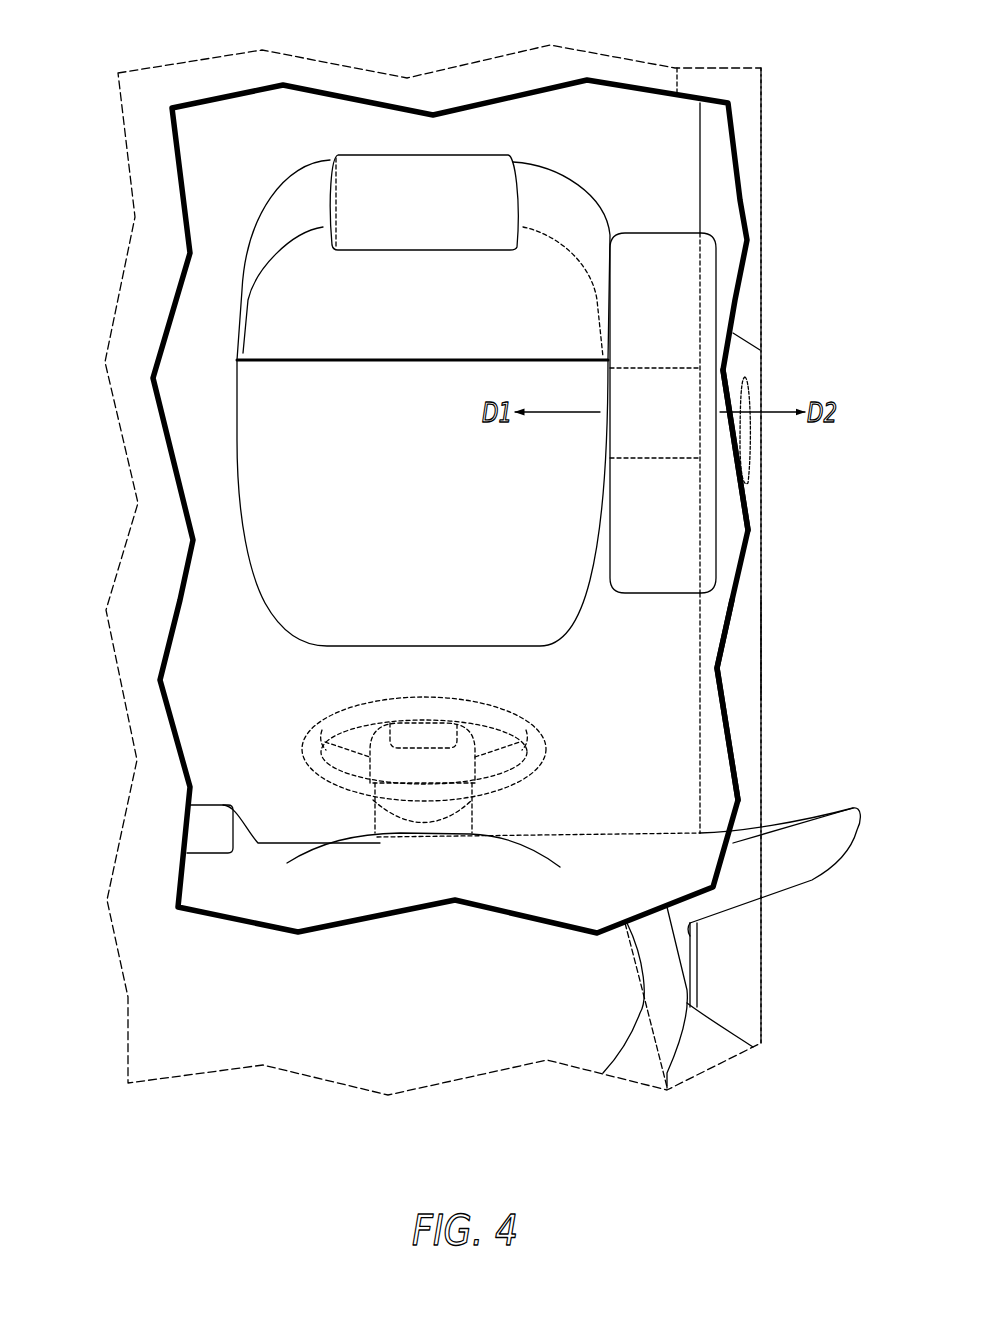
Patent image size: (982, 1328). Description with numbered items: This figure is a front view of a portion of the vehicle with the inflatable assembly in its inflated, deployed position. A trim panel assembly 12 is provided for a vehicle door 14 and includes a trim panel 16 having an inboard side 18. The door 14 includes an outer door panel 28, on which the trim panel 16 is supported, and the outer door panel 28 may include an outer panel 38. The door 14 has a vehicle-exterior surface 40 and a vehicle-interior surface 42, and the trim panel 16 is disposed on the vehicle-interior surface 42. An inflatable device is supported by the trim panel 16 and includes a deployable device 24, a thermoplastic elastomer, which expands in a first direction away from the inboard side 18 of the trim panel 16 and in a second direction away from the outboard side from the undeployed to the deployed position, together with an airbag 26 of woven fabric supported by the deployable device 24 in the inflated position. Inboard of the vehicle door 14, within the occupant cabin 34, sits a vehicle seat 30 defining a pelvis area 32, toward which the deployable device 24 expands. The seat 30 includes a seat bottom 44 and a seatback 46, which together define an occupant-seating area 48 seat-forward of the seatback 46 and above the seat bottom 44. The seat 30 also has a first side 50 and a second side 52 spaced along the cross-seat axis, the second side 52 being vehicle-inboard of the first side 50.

The trim panel assembly 12 is at (657, 648).
The vehicle door 14 is at (790, 575).
The trim panel 16 is at (710, 613).
The inboard side 18 is at (688, 698).
The deployable device 24 is at (345, 424).
The airbag 26 is at (658, 247).
The outer door panel 28 is at (745, 690).
The vehicle seat 30 is at (273, 518).
The pelvis area 32 is at (437, 400).
The occupant cabin 34 is at (628, 117).
The outer panel 38 is at (757, 508).
The vehicle-exterior surface 40 is at (773, 638).
The vehicle-interior surface 42 is at (675, 680).
The seat bottom 44 is at (247, 387).
The seatback 46 is at (253, 222).
The occupant-seating area 48 is at (548, 273).
The first side 50 is at (578, 585).
The second side 52 is at (270, 583).